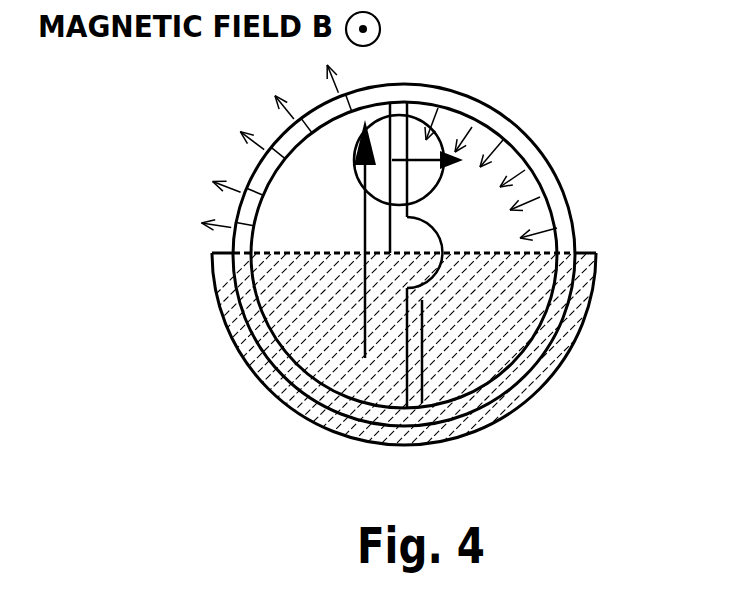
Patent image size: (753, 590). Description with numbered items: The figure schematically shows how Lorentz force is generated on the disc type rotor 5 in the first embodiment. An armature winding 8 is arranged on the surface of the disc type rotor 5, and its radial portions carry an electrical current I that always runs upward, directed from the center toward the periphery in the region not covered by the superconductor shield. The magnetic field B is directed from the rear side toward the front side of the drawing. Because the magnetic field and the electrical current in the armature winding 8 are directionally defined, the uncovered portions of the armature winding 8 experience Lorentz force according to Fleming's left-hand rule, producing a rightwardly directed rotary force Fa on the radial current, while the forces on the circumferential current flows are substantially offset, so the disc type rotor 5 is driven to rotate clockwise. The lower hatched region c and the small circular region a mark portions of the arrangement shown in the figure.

The conductor portion a is at (428, 138).
The armature winding 8 is at (500, 187).
The disc type rotor 5 is at (523, 230).
The lower hatched support member c is at (467, 425).